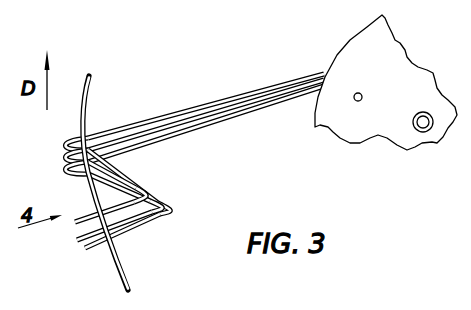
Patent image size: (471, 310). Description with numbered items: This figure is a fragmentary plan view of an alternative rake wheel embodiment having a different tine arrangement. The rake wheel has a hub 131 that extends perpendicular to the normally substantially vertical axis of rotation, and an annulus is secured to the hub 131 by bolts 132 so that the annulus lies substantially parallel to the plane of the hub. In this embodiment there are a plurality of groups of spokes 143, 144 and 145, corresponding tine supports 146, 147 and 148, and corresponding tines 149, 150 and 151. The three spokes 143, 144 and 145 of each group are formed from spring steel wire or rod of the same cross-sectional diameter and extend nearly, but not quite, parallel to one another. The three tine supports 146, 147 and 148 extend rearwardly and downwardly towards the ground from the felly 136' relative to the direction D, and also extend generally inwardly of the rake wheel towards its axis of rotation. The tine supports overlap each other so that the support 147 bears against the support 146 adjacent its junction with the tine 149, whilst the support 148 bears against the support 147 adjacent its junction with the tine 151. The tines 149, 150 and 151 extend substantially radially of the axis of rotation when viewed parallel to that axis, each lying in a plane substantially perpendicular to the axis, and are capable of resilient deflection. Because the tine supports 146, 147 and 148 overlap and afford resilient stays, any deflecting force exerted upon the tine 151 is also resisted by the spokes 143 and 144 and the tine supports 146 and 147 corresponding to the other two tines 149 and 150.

The hub 131 is at (349, 50).
The bolts 132 is at (363, 93).
The felly 136' is at (116, 176).
The spoke 143 is at (150, 121).
The spoke 144 is at (195, 117).
The spoke 145 is at (217, 127).
The tine support 146 is at (117, 173).
The tine support 147 is at (150, 196).
The tine support 148 is at (75, 188).
The tine 149 is at (78, 223).
The tine 150 is at (77, 240).
The tine 151 is at (83, 251).